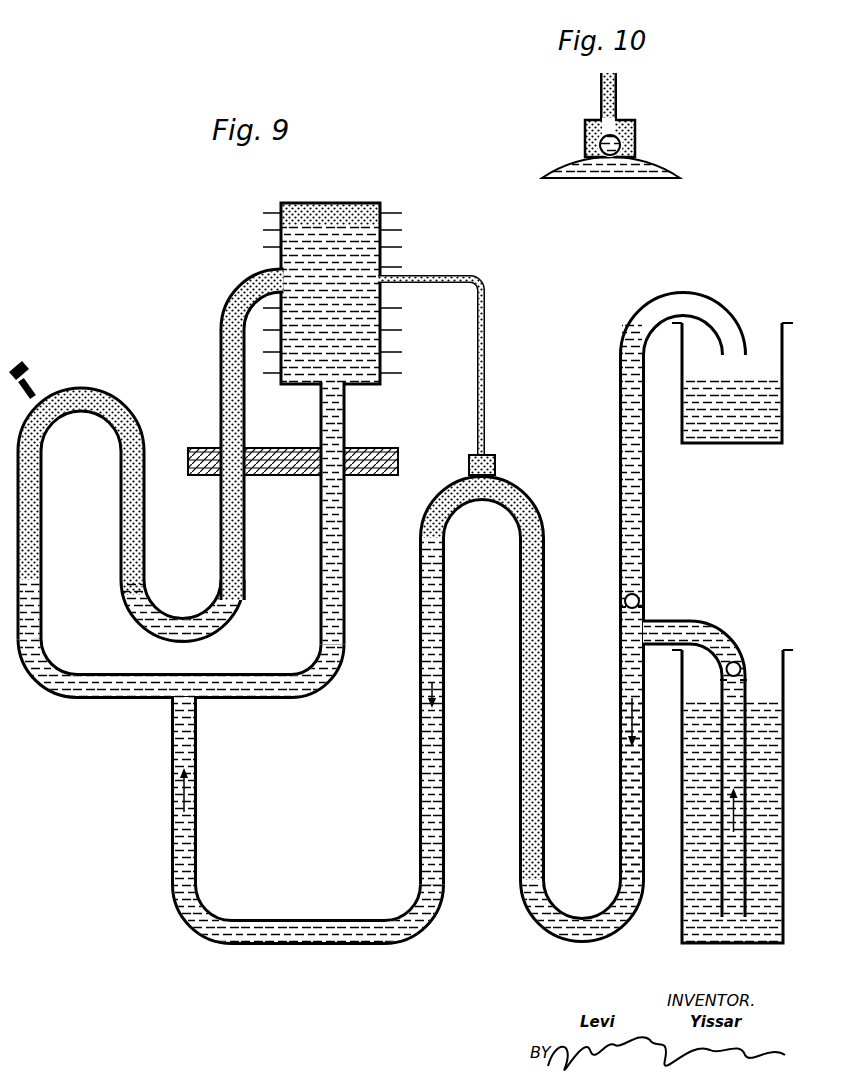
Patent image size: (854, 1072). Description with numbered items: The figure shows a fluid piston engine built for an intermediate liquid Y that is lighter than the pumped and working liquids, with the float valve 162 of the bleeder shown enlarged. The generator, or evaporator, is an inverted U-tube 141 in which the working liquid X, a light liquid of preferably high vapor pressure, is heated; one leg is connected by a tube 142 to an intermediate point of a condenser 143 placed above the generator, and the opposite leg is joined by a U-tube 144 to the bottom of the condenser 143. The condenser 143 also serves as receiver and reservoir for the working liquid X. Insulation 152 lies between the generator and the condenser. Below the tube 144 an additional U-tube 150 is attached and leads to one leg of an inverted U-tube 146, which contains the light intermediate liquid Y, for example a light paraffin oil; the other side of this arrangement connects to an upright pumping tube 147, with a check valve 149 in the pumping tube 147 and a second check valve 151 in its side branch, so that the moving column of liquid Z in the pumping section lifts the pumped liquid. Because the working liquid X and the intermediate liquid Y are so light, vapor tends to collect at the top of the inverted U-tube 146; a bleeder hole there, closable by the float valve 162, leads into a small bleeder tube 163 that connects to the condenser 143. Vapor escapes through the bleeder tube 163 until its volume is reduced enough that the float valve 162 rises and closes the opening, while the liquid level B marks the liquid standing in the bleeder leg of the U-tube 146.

In FIG. 9, the inverted U-tube generator 141 is at (43, 468).
In FIG. 9, the tube 142 is at (220, 327).
In FIG. 9, the condenser 143 is at (368, 384).
In FIG. 9, the U-tube 144 is at (243, 693).
In FIG. 9, the inverted U-tube 146 is at (447, 629).
In FIG. 9, the pumping tube 147 is at (647, 536).
In FIG. 9, the check valve 149 is at (650, 600).
In FIG. 9, the U-tube 150 is at (283, 925).
In FIG. 9, the check valve 151 is at (745, 662).
In FIG. 9, the insulation 152 is at (372, 475).
In FIG. 10, the float valve 162 is at (636, 140).
In FIG. 9, the bleeder tube 163 is at (433, 284).
In FIG. 9, the working liquid X is at (43, 612).
In FIG. 9, the intermediate liquid Y is at (520, 553).
In FIG. 9, the liquid column Z is at (630, 762).
In FIG. 9, the liquid level B is at (430, 540).